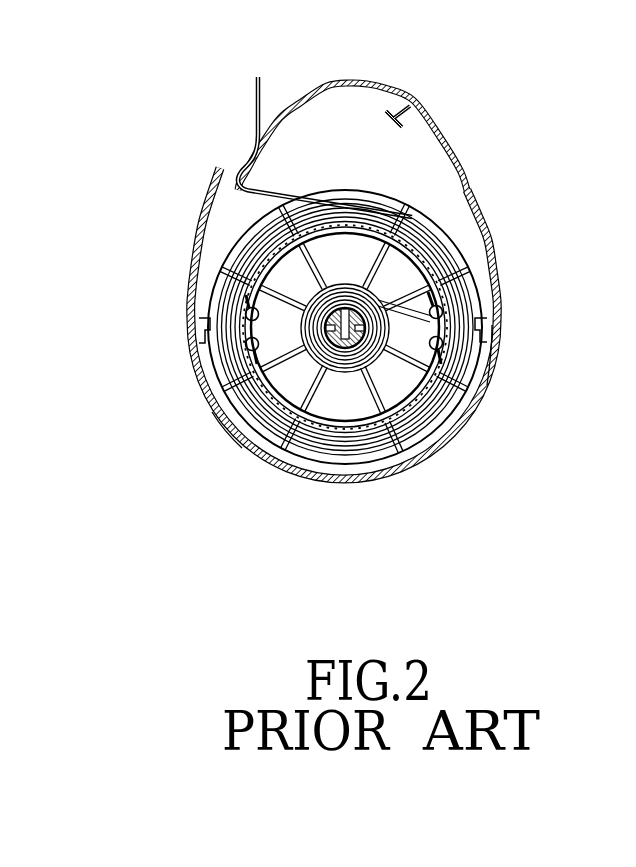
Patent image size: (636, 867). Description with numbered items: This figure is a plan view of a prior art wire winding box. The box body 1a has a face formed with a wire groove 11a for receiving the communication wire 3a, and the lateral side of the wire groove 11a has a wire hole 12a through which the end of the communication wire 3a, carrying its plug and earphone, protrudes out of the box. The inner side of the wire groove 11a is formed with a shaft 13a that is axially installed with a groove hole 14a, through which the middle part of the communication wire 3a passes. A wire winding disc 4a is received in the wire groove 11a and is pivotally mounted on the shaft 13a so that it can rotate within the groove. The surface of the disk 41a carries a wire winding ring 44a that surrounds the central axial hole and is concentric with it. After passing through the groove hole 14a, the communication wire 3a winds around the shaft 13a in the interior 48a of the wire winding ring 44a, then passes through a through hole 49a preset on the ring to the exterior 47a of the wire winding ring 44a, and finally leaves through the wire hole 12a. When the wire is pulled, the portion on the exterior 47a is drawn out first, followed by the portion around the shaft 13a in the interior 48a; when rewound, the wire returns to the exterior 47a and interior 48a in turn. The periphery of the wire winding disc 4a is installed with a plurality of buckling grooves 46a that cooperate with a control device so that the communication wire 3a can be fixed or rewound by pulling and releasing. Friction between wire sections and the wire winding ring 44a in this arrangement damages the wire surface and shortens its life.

The box body 1a is at (473, 176).
The wire groove 11a is at (427, 160).
The wire hole 12a is at (236, 170).
The communication wire 3a is at (230, 290).
The wire winding disc 4a is at (447, 415).
The shaft 13a is at (342, 348).
The groove hole 14a is at (358, 348).
The disk 41a is at (481, 365).
The wire winding ring 44a is at (282, 382).
The buckling groove 46a is at (202, 335).
The exterior of the wire winding ring 47a is at (268, 440).
The interior of the wire winding ring 48a is at (232, 429).
The through hole 49a is at (482, 315).